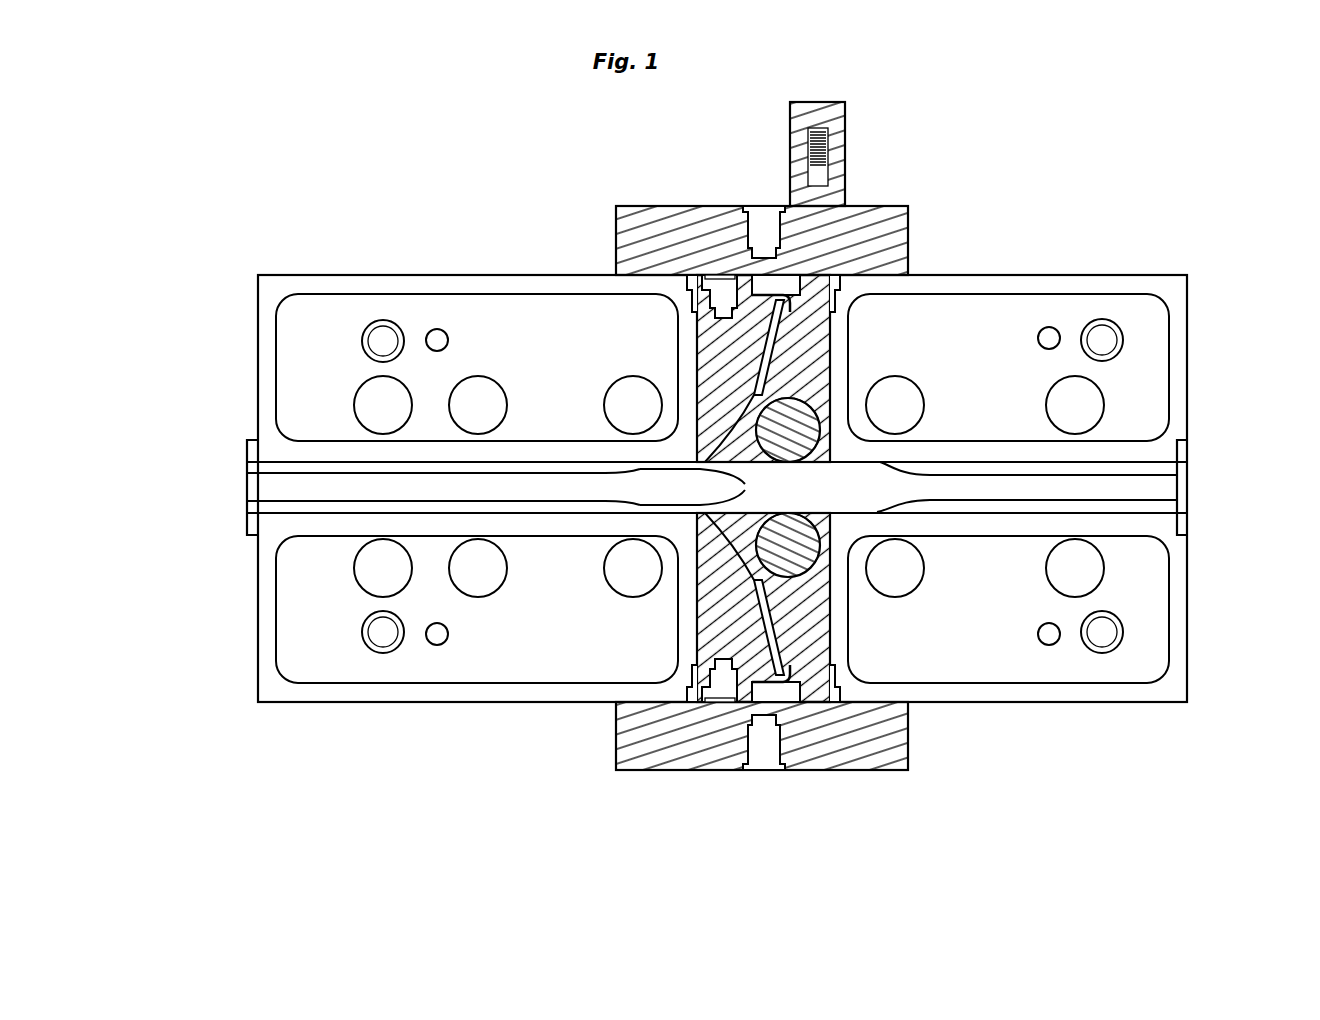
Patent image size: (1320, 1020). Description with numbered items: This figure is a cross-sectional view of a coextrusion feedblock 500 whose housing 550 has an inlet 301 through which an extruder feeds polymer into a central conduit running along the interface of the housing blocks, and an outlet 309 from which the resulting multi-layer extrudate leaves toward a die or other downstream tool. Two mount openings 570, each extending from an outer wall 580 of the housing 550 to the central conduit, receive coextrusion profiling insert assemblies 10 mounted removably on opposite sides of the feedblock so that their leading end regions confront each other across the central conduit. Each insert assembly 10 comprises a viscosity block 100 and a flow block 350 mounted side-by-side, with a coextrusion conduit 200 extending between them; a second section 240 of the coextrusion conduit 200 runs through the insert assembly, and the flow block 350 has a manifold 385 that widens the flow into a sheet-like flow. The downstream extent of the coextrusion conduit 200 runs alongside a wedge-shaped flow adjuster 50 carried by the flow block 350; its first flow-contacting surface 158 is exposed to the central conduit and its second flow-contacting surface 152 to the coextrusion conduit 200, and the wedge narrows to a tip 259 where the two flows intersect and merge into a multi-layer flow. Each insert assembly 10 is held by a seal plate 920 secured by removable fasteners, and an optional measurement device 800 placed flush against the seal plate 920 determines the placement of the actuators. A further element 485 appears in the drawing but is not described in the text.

The coextrusion profiling insert assembly 10 is at (807, 456).
The wedge-shaped flow adjuster 50 is at (815, 385).
The viscosity block 100 is at (772, 438).
The second flow-contacting surface 152 is at (745, 445).
The first flow-contacting surface 158 is at (768, 492).
The coextrusion conduit 200 is at (697, 352).
The second section of the coextrusion conduit 240 is at (785, 280).
The tip 259 is at (700, 466).
The inlet 301 is at (1200, 492).
The outlet 309 is at (242, 499).
The flow block 350 is at (805, 340).
The manifold 385 is at (730, 307).
The washer 485 is at (755, 712).
The coextrusion feedblock 500 is at (706, 502).
The housing 550 is at (323, 270).
The mount opening 570 is at (700, 302).
The outer wall 580 is at (985, 275).
The measurement device 800 is at (815, 96).
The seal plate 920 is at (887, 220).